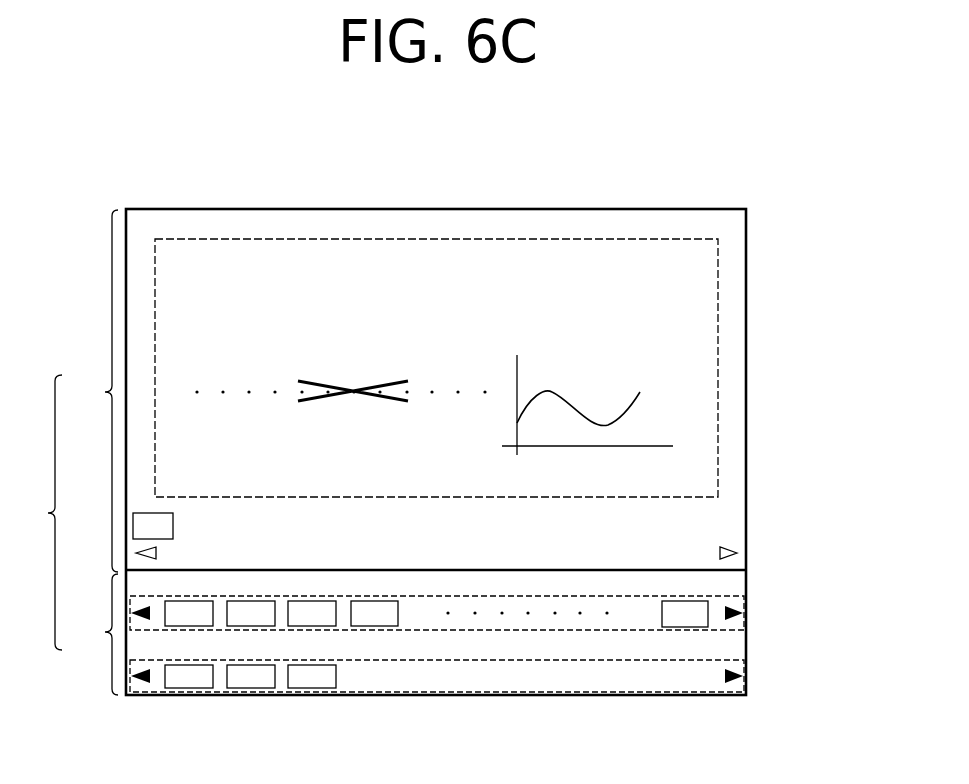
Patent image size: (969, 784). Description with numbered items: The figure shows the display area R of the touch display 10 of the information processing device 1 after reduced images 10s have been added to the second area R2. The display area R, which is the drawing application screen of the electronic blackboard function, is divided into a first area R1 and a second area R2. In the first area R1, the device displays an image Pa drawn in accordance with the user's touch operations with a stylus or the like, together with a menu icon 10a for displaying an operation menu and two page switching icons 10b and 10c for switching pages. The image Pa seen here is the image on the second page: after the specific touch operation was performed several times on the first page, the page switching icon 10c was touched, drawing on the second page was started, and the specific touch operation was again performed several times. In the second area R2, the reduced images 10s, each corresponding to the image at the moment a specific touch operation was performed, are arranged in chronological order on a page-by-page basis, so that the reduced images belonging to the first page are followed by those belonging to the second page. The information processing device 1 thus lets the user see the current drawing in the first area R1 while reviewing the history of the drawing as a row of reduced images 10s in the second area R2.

The information processing device 1 is at (621, 189).
The touch display 10 is at (746, 266).
The image Pa is at (718, 307).
The menu icon 10a is at (173, 516).
The page switching icon 10b is at (157, 553).
The page switching icon 10c is at (737, 551).
The reduced image 10s is at (486, 671).
The display area R is at (44, 512).
The first area R1 is at (91, 391).
The second area R2 is at (91, 634).